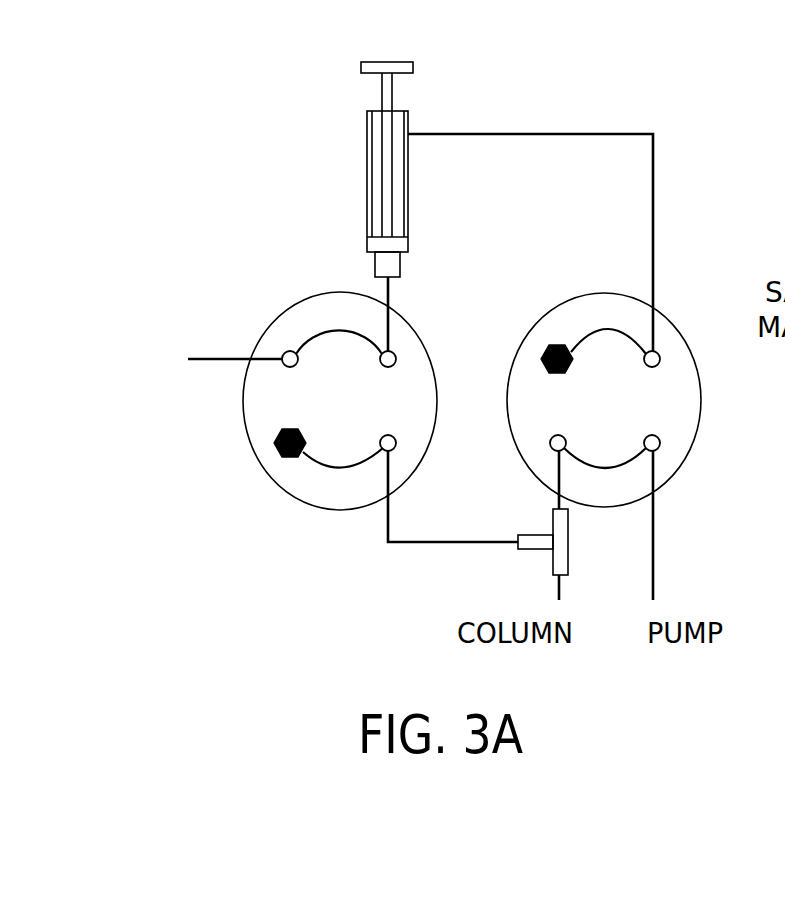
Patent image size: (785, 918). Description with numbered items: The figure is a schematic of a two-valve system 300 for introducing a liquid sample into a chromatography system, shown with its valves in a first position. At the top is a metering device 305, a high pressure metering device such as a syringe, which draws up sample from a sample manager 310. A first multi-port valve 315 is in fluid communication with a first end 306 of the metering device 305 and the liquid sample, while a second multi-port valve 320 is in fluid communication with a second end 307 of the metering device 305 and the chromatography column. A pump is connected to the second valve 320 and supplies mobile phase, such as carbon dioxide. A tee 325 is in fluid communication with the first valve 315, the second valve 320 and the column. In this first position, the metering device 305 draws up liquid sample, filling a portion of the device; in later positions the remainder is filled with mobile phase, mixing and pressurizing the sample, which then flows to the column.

The two-valve system 300 is at (676, 98).
The metering device 305 is at (299, 218).
The first end 306 is at (397, 233).
The second end 307 is at (398, 120).
The sample manager 310 is at (172, 380).
The first multi-port valve 315 is at (282, 468).
The second multi-port valve 320 is at (677, 440).
The tee 325 is at (547, 549).